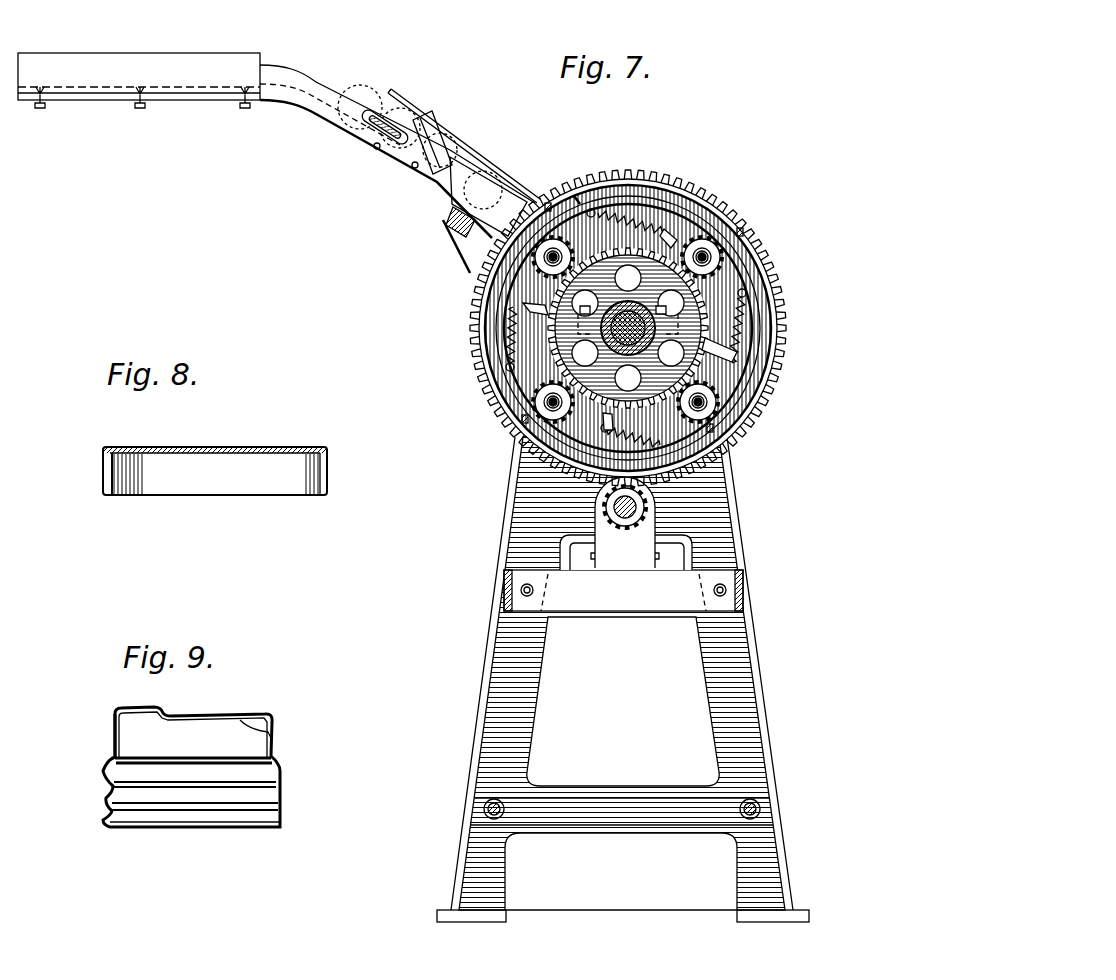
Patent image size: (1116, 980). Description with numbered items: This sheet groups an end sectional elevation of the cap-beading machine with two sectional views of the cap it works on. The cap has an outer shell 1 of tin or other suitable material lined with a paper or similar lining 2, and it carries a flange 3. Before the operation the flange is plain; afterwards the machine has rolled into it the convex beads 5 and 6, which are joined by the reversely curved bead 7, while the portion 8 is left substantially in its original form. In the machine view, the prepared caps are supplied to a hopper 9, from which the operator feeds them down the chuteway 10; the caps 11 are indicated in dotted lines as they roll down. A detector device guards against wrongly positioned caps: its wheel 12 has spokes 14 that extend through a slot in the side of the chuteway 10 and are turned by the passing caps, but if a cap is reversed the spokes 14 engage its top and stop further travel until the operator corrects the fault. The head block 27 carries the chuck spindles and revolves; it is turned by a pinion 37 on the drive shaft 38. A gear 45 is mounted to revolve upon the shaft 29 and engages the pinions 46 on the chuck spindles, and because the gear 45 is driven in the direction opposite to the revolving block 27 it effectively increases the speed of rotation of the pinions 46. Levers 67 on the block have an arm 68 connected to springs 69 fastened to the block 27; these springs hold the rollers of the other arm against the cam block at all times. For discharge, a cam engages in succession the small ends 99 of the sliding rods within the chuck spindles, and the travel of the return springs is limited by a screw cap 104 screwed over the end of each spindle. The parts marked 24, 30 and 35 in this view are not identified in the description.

In FIG. 8, the outer shell 1 is at (330, 457).
In FIG. 9, the outer shell 1 is at (248, 704).
In FIG. 8, the lining 2 is at (112, 482).
In FIG. 9, the lining 2 is at (247, 718).
In FIG. 8, the flange 3 is at (103, 470).
In FIG. 9, the convex bead 5 is at (104, 773).
In FIG. 9, the convex bead 6 is at (104, 822).
In FIG. 9, the reversely curved bead 7 is at (106, 797).
In FIG. 9, the portion 8 is at (112, 732).
In FIG. 7, the hopper 9 is at (135, 54).
In FIG. 7, the chuteway 10 is at (310, 80).
In FIG. 7, the caps 11 is at (362, 86).
In FIG. 7, the detector wheel 12 is at (394, 115).
In FIG. 7, the spokes 14 is at (374, 141).
In FIG. 7, the arm bearing 24 is at (463, 225).
In FIG. 7, the block 27 is at (683, 217).
In FIG. 7, the shaft 29 is at (648, 330).
In FIG. 7, the standard 30 is at (721, 669).
In FIG. 7, the main gear 35 is at (635, 176).
In FIG. 7, the pinion 37 is at (653, 490).
In FIG. 7, the drive shaft 38 is at (614, 564).
In FIG. 7, the gear 45 is at (577, 200).
In FIG. 7, the pinions 46 is at (549, 205).
In FIG. 7, the levers 67 is at (533, 310).
In FIG. 7, the arm 68 is at (697, 213).
In FIG. 7, the springs 69 is at (631, 213).
In FIG. 7, the small ends 99 is at (740, 240).
In FIG. 7, the screw cap 104 is at (757, 241).